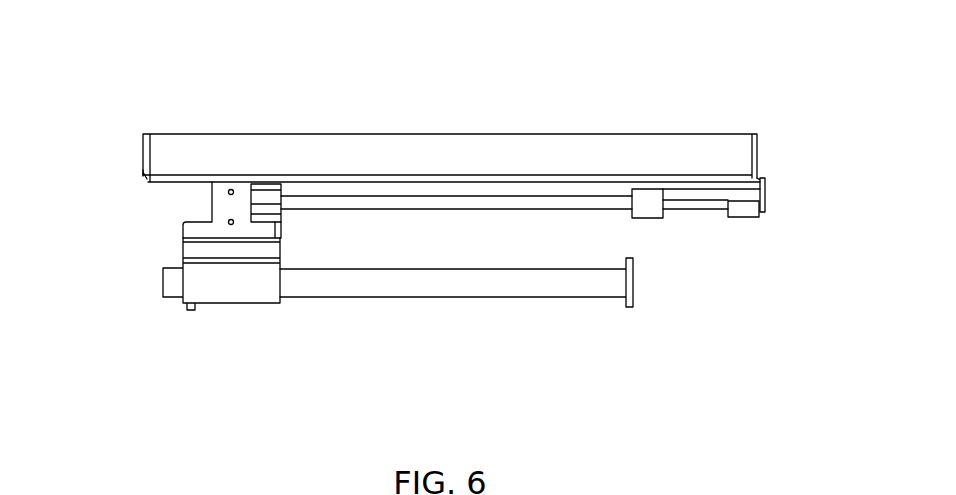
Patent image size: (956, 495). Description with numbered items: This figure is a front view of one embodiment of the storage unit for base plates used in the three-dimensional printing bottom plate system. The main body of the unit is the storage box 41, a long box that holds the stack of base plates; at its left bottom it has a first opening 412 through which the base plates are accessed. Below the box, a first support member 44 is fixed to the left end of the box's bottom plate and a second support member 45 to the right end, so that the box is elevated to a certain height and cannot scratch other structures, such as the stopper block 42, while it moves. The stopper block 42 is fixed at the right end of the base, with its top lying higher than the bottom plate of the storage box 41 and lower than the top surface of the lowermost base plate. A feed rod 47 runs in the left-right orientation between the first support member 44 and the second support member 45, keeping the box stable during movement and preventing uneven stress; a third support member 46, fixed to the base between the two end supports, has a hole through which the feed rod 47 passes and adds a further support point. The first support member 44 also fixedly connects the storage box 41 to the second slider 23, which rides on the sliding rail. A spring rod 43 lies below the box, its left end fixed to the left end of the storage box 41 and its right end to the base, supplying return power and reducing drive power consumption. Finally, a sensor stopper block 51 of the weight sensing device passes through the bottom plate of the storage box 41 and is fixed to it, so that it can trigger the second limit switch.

The storage box 41 is at (392, 152).
The first opening 412 is at (143, 182).
The feed rod 47 is at (535, 202).
The sensor stopper block 51 is at (264, 184).
The first support member 44 is at (191, 228).
The second slider 23 is at (218, 287).
The spring rod 43 is at (355, 283).
The third support member 46 is at (655, 212).
The second support member 45 is at (740, 213).
The stopper block 42 is at (763, 212).